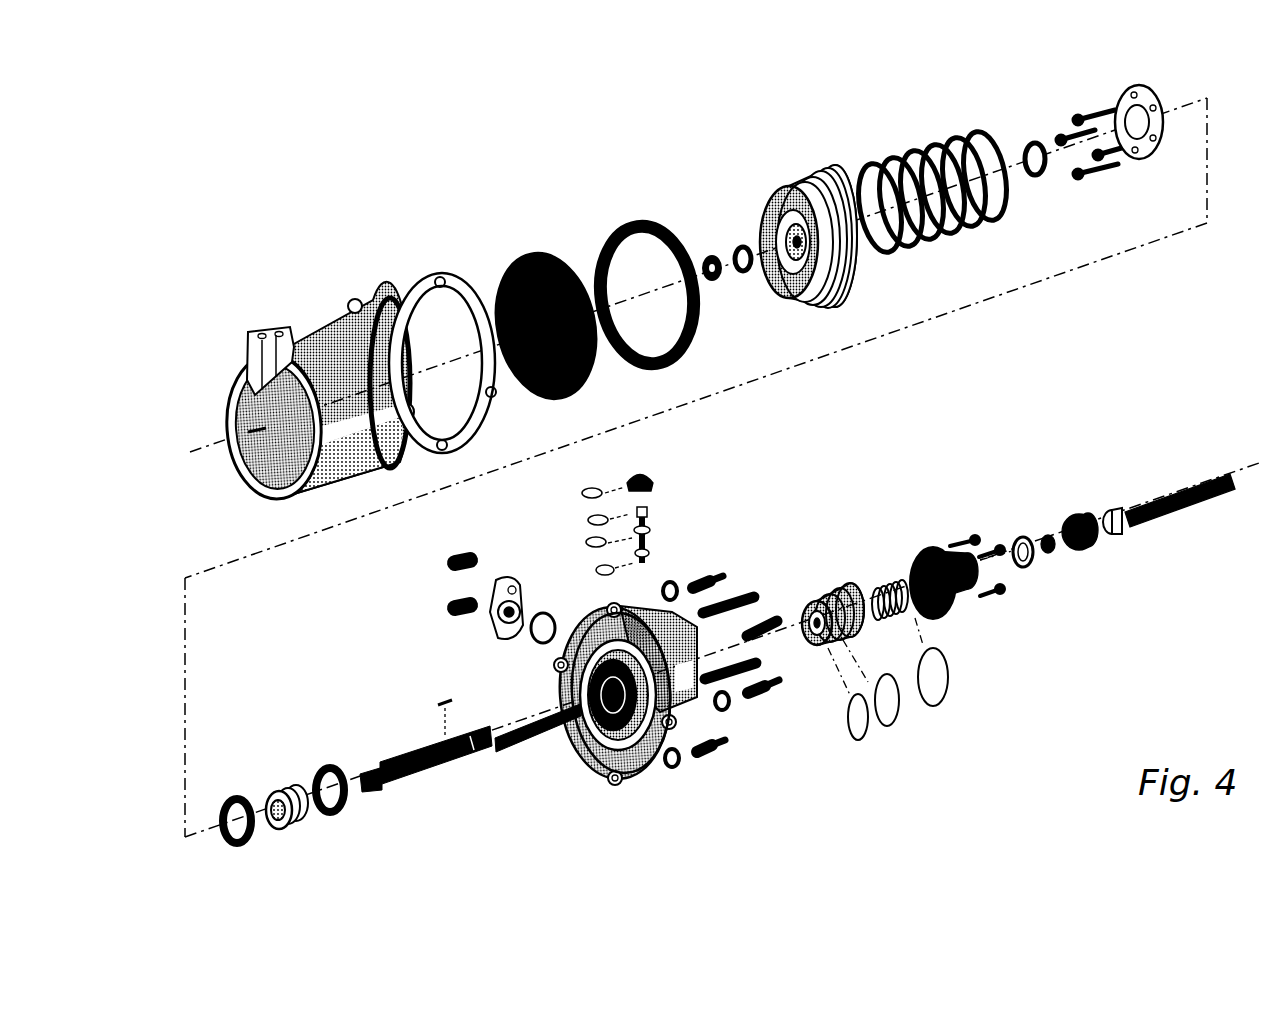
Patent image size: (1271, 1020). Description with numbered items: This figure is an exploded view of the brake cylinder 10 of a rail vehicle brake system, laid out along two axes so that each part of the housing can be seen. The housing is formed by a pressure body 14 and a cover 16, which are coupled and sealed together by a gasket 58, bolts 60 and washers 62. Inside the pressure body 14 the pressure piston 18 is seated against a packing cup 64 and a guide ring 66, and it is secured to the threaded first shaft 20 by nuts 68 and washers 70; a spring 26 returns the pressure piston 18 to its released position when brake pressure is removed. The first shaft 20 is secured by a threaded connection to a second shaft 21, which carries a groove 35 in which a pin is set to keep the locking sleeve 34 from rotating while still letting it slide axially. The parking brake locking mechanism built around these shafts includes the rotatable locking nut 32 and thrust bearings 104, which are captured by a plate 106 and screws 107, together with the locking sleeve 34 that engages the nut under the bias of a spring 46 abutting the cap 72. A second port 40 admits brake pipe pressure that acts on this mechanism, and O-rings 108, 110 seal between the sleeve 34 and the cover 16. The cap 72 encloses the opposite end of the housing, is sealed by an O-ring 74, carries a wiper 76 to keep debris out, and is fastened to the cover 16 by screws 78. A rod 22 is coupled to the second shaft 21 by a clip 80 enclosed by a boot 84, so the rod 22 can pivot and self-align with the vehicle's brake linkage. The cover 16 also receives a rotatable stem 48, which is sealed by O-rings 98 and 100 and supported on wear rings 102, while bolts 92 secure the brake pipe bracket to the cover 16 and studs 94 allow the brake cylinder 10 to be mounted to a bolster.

The brake cylinder 10 is at (282, 140).
The pressure body 14 is at (246, 314).
The gasket 58 is at (390, 270).
The packing cup 64 is at (494, 240).
The guide ring 66 is at (612, 227).
The nuts 68 is at (700, 255).
The washers 70 is at (732, 243).
The pressure piston 18 is at (778, 173).
The spring 26 is at (862, 162).
The screws 107 is at (1068, 105).
The plate 106 is at (1115, 84).
The thrust bearings 104 is at (343, 813).
The locking nut 32 is at (298, 833).
The first shaft 20 is at (422, 785).
The groove 35 is at (468, 764).
The second shaft 21 is at (515, 750).
The second port 40 is at (437, 703).
The bolts 92 is at (446, 558).
The O-ring 98 is at (537, 645).
The O-ring 100 is at (580, 495).
The wear rings 102 is at (584, 544).
The spring 46 is at (657, 473).
The rotatable stem 48 is at (652, 520).
The cover 16 is at (652, 778).
The washers 62 is at (674, 583).
The bolts 60 is at (712, 570).
The studs 94 is at (497, 637).
The locking sleeve 34 is at (838, 587).
The cap 72 is at (947, 620).
The screws 78 is at (970, 532).
The wiper 76 is at (1028, 573).
The clip 80 is at (1053, 562).
The boot 84 is at (1087, 552).
The rod 22 is at (1167, 517).
The O-ring 74 is at (955, 707).
The O-ring 110 is at (903, 723).
The O-ring 108 is at (870, 733).